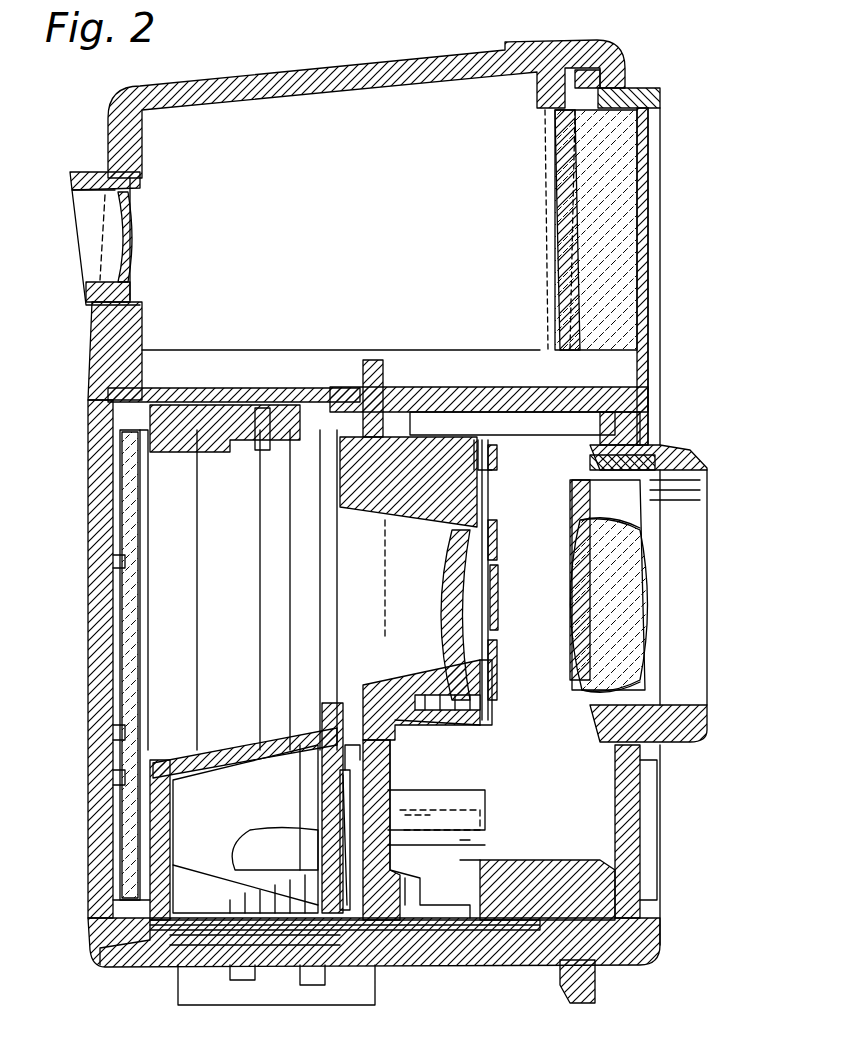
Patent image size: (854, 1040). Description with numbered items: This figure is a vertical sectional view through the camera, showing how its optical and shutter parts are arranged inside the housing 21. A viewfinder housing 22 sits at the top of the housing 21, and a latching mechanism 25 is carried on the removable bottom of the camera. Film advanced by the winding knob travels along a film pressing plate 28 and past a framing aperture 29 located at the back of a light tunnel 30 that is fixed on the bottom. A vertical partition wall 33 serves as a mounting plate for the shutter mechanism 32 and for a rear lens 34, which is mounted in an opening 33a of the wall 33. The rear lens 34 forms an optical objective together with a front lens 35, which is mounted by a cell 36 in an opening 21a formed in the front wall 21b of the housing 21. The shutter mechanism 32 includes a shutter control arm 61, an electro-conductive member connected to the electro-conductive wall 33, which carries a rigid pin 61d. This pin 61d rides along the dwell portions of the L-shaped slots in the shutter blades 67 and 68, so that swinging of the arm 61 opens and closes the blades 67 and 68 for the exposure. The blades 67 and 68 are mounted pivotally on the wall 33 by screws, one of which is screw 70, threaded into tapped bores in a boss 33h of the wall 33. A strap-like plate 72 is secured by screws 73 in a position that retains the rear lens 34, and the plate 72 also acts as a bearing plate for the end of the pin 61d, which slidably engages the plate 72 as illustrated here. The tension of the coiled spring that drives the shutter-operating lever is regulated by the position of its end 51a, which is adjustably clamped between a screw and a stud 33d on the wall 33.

The housing 21 is at (95, 828).
The opening 21a is at (600, 704).
The front wall 21b is at (622, 810).
The viewfinder housing 22 is at (210, 82).
The latching mechanism 25 is at (348, 790).
The film pressing plate 28 is at (118, 668).
The framing aperture 29 is at (162, 762).
The light tunnel 30 is at (246, 763).
The shutter mechanism 32 is at (504, 684).
The vertical partition wall 33 is at (385, 730).
The opening 33a is at (410, 680).
The stud 33d is at (460, 806).
The boss 33h is at (392, 520).
The rear lens 34 is at (450, 590).
The front lens 35 is at (600, 590).
The cell 36 is at (593, 718).
The end of spring 51a is at (490, 858).
The shutter control arm 61 is at (496, 552).
The pin 61d is at (496, 528).
The shutter blade 67 is at (496, 612).
The shutter blade 68 is at (495, 642).
The screw 70 is at (495, 456).
The strap-like plate 72 is at (393, 505).
The screw 73 is at (490, 718).